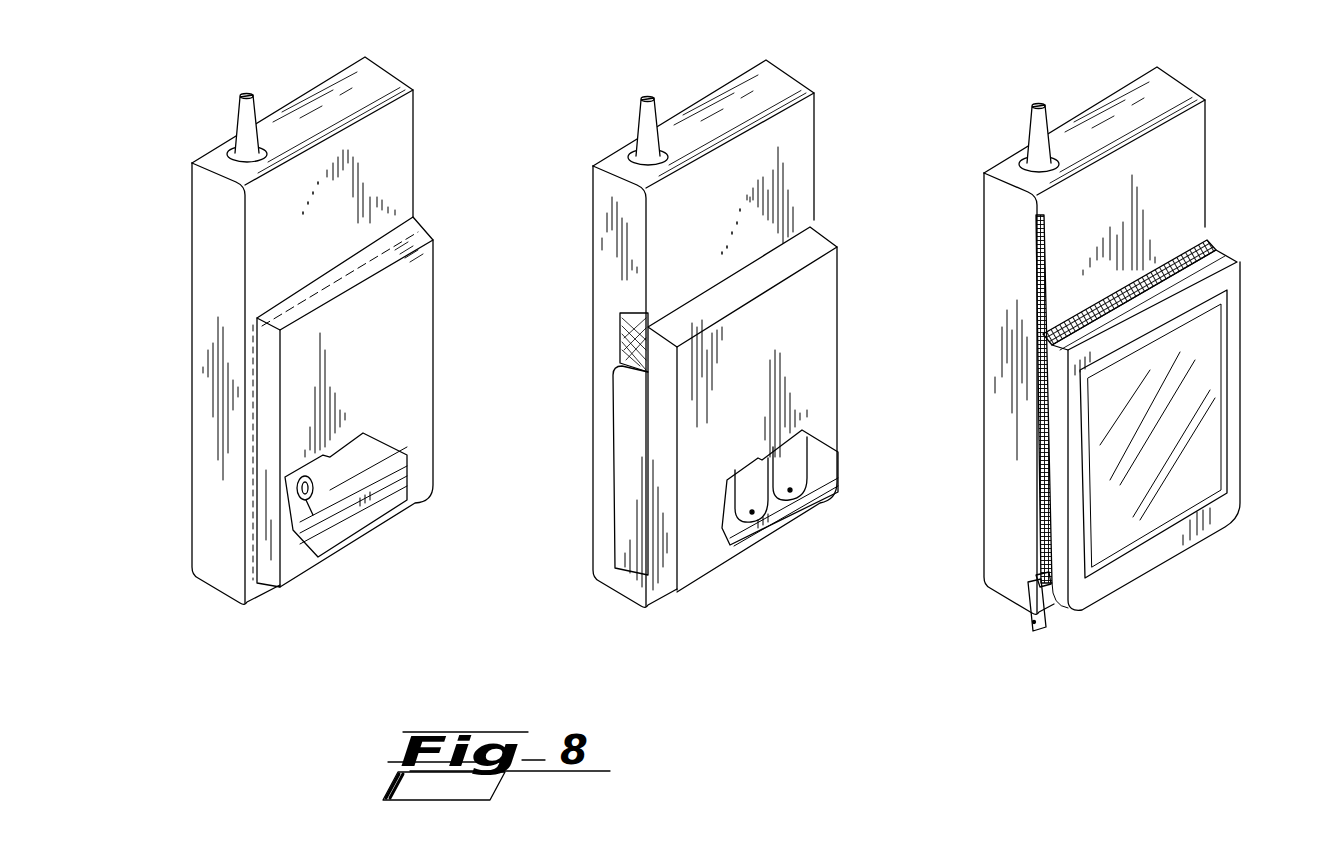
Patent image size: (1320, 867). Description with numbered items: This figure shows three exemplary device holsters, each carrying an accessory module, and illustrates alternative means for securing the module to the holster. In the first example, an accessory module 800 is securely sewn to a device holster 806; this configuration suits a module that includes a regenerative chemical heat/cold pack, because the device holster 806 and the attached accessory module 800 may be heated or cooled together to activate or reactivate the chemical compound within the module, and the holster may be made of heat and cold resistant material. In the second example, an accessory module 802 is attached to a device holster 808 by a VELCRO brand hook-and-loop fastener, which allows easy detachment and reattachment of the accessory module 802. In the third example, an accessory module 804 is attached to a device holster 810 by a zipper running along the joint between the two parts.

The accessory module 800 is at (458, 359).
The accessory module 802 is at (868, 321).
The accessory module 804 is at (1276, 387).
The device holster 806 is at (132, 216).
The device holster 808 is at (580, 125).
The device holster 810 is at (946, 174).